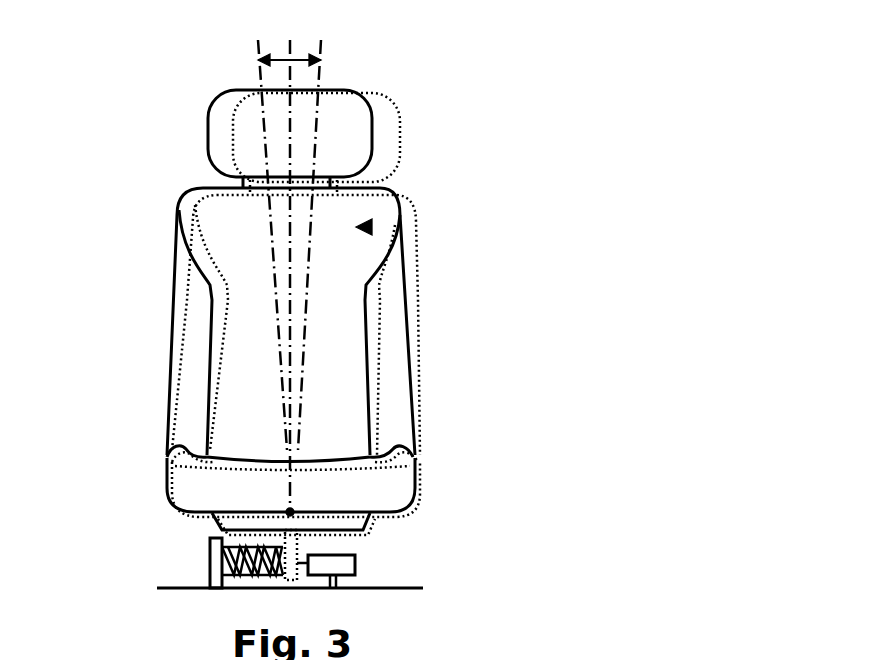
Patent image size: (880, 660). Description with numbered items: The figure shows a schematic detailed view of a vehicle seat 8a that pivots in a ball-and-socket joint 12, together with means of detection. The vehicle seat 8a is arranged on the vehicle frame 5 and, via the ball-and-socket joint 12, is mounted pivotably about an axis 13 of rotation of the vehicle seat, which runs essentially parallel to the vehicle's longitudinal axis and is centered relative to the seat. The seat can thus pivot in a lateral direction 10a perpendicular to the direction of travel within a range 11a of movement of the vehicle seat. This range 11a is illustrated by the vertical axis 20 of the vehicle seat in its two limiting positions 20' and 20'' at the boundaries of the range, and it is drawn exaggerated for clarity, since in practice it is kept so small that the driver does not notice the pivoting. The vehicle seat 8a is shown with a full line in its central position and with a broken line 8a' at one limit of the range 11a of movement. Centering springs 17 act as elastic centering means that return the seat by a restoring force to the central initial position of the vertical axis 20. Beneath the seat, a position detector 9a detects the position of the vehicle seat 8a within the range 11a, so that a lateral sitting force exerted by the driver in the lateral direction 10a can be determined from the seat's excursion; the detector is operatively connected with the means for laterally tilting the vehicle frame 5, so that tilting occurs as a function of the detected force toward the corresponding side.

The vehicle frame 5 is at (158, 587).
The vehicle seat 8a is at (236, 297).
The vehicle seat at limit of range of movement 8a' is at (222, 329).
The position detector 9a is at (343, 565).
The lateral direction 10a is at (366, 227).
The range of movement of the vehicle seat 11a is at (305, 57).
The ball-and-socket joint 12 is at (302, 507).
The axis of rotation of the vehicle seat 13 is at (287, 510).
The centering springs 17 is at (210, 543).
The vertical axis of the vehicle seat 20 is at (405, 274).
The limiting position of the vertical axis 20' is at (413, 245).
The limiting position of the vertical axis 20'' is at (397, 240).